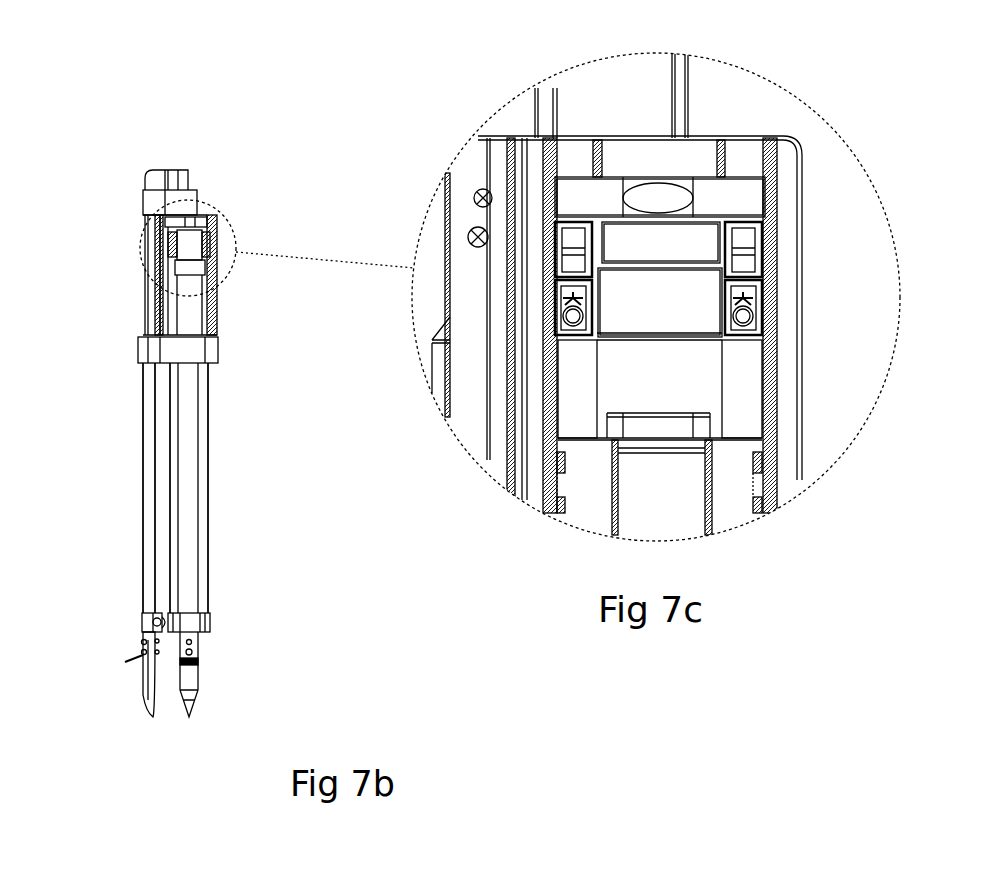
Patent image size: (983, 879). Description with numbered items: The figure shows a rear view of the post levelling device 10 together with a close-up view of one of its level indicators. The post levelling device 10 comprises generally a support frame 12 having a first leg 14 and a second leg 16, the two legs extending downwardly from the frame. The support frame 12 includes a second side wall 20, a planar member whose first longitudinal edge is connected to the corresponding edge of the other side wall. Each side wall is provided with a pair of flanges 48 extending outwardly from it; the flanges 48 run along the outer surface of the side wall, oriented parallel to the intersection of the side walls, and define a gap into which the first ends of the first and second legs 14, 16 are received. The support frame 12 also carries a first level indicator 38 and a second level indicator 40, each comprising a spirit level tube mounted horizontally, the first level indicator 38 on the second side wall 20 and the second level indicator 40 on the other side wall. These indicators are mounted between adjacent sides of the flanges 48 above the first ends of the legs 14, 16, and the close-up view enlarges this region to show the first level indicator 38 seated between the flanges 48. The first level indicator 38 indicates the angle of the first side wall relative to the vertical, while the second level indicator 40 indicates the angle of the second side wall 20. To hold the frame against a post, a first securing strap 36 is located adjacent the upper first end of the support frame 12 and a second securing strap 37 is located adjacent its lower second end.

In FIG. 7b, the post levelling device 10 is at (166, 130).
In FIG. 7b, the support frame 12 is at (198, 222).
In FIG. 7b, the first leg 14 is at (153, 535).
In FIG. 7b, the second leg 16 is at (192, 480).
In FIG. 7c, the second leg 16 is at (645, 516).
In FIG. 7b, the second side wall 20 is at (219, 303).
In FIG. 7c, the second side wall 20 is at (793, 250).
In FIG. 7b, the first securing strap 36 is at (156, 203).
In FIG. 7b, the second securing strap 37 is at (192, 352).
In FIG. 7c, the first level indicator 38 is at (665, 193).
In FIG. 7b, the second level indicator 40 is at (192, 224).
In FIG. 7c, the flanges 48 is at (548, 477).